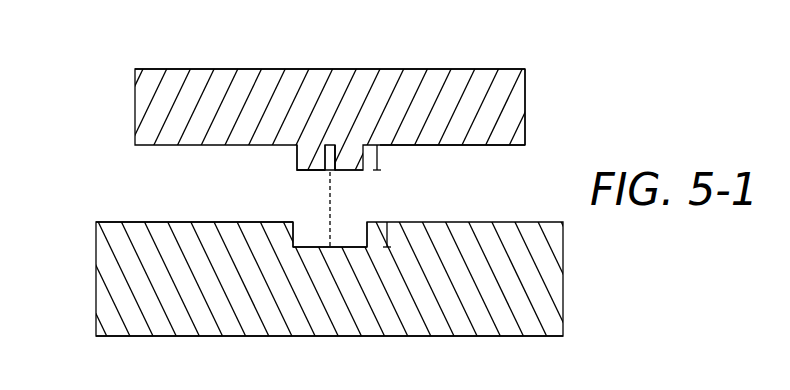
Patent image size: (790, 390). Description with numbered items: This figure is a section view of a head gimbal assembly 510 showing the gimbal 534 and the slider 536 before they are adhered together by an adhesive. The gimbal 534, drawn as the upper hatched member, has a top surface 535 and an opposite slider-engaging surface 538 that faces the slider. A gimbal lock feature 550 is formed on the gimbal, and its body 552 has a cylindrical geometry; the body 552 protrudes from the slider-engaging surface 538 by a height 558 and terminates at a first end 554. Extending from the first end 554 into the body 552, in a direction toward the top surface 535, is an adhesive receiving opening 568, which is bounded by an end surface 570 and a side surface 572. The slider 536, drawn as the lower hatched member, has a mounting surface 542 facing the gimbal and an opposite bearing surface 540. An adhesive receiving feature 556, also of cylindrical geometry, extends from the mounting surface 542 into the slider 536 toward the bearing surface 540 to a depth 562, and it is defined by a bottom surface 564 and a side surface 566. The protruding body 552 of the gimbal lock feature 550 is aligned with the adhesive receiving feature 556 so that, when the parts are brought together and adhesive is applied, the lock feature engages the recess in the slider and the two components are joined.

The head gimbal assembly 510 is at (578, 67).
The gimbal 534 is at (135, 75).
The top surface 535 is at (182, 69).
The slider 536 is at (96, 250).
The slider-engaging surface 538 is at (503, 145).
The bearing surface 540 is at (500, 337).
The mounting surface 542 is at (140, 222).
The gimbal lock feature 550 is at (275, 158).
The body 552 is at (362, 158).
The first end 554 is at (345, 172).
The adhesive receiving feature 556 is at (341, 257).
The height 558 is at (378, 153).
The depth 562 is at (388, 232).
The bottom surface 564 is at (309, 248).
The side surface 566 is at (292, 240).
The adhesive receiving opening 568 is at (326, 138).
The end surface 570 is at (352, 160).
The side surface 572 is at (317, 153).